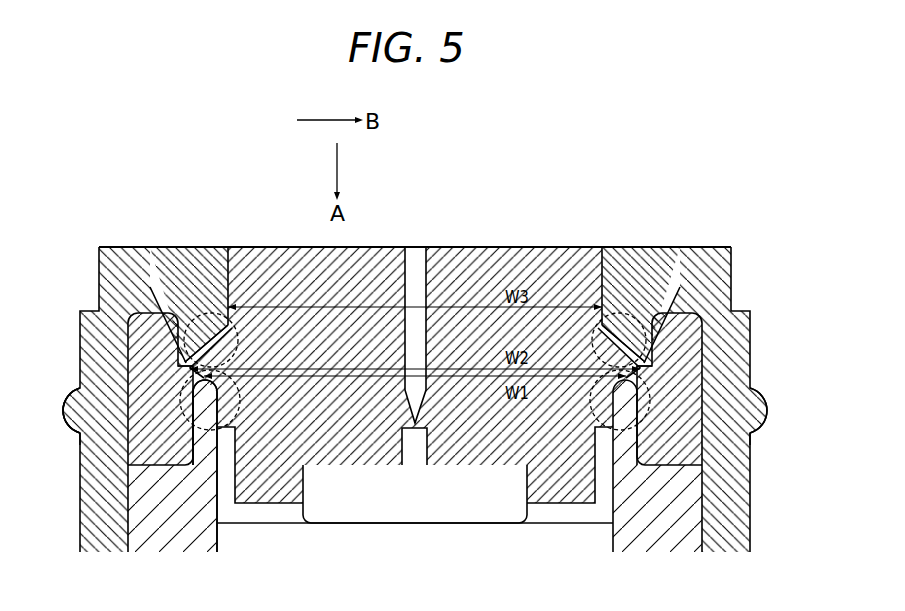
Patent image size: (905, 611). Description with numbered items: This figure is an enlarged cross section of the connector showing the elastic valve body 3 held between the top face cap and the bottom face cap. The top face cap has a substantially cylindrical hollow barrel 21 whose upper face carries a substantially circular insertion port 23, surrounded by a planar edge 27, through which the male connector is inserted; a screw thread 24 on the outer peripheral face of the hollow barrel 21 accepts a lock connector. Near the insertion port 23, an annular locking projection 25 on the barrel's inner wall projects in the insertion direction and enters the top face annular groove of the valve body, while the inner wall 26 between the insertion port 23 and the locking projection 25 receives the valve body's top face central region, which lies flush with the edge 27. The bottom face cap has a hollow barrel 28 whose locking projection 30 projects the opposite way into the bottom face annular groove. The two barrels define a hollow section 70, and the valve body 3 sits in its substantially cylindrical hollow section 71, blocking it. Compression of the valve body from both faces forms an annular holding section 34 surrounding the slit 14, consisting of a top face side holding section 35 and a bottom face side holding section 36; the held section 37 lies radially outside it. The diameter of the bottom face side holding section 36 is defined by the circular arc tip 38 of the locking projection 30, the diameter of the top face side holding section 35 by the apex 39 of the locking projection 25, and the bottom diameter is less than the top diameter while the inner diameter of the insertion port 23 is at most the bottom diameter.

The elastic valve body 3 is at (513, 247).
The slit 14 is at (410, 247).
The hollow barrel 21 is at (100, 247).
The insertion port 23 is at (228, 247).
The screw thread 24 is at (77, 392).
The locking projection 25 is at (150, 287).
The inner wall 26 is at (200, 247).
The edge 27 is at (152, 247).
The hollow barrel 28 is at (140, 507).
The locking projection 30 is at (202, 384).
The holding section 34 is at (187, 312).
The top face side holding section 35 is at (216, 345).
The bottom face side holding section 36 is at (244, 473).
The held section 37 is at (77, 404).
The circular arc tip 38 is at (82, 437).
The apex 39 is at (181, 366).
The hollow section 70 is at (212, 495).
The hollow section 71 is at (205, 466).